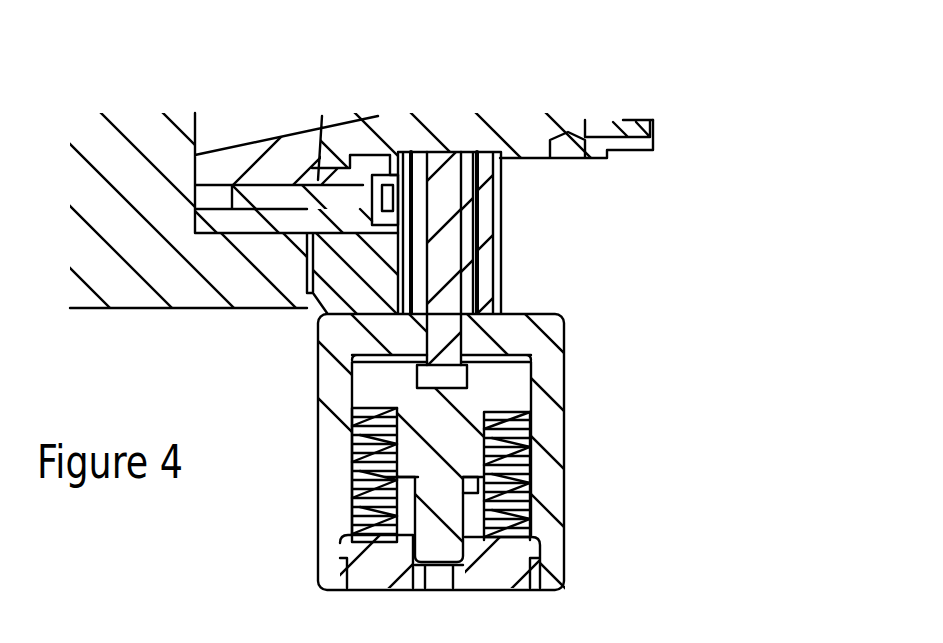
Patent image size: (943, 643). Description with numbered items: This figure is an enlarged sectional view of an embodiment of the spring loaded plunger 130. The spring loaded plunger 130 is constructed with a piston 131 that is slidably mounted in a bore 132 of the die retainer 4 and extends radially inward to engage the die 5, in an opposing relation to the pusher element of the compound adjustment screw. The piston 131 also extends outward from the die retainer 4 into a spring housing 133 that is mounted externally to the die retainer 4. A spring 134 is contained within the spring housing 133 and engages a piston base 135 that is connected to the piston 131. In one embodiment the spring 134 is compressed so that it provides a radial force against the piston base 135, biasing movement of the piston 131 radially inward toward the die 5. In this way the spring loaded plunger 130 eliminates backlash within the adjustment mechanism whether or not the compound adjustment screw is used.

The die retainer 4 is at (310, 312).
The die 5 is at (542, 148).
The spring loaded plunger 130 is at (471, 321).
The piston 131 is at (452, 207).
The bore 132 is at (460, 253).
The spring housing 133 is at (542, 313).
The spring 134 is at (513, 434).
The piston base 135 is at (495, 396).